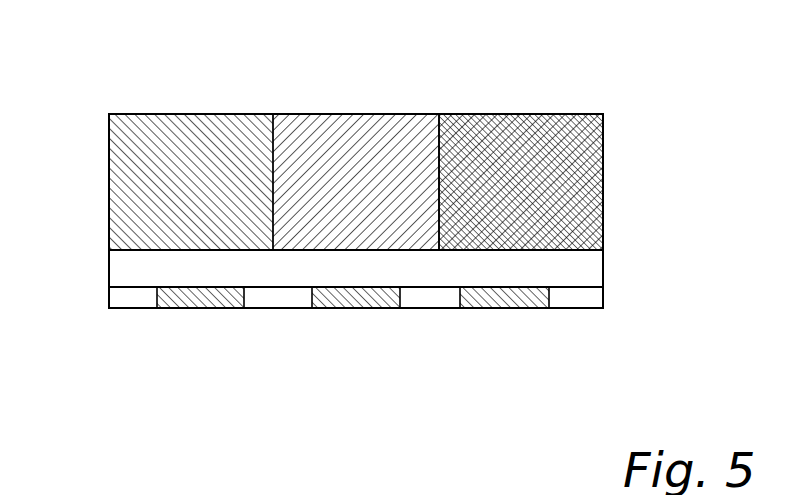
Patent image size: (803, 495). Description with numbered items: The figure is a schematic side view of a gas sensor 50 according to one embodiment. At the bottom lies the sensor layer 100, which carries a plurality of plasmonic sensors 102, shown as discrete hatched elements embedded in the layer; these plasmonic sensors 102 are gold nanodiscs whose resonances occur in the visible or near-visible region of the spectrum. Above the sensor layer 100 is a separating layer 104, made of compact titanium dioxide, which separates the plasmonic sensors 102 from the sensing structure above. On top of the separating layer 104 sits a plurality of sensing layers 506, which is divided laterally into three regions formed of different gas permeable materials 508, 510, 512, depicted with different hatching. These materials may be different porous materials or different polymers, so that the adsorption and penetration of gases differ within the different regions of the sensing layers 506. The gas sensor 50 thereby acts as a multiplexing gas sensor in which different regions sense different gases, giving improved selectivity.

The gas sensor 50 is at (110, 77).
The sensor layer 100 is at (438, 383).
The plasmonic sensors 102 is at (507, 309).
The separating layer 104 is at (603, 268).
The plurality of sensing layers 506 is at (417, 132).
The gas permeable material 508 is at (202, 140).
The gas permeable material 510 is at (362, 140).
The gas permeable material 512 is at (512, 150).